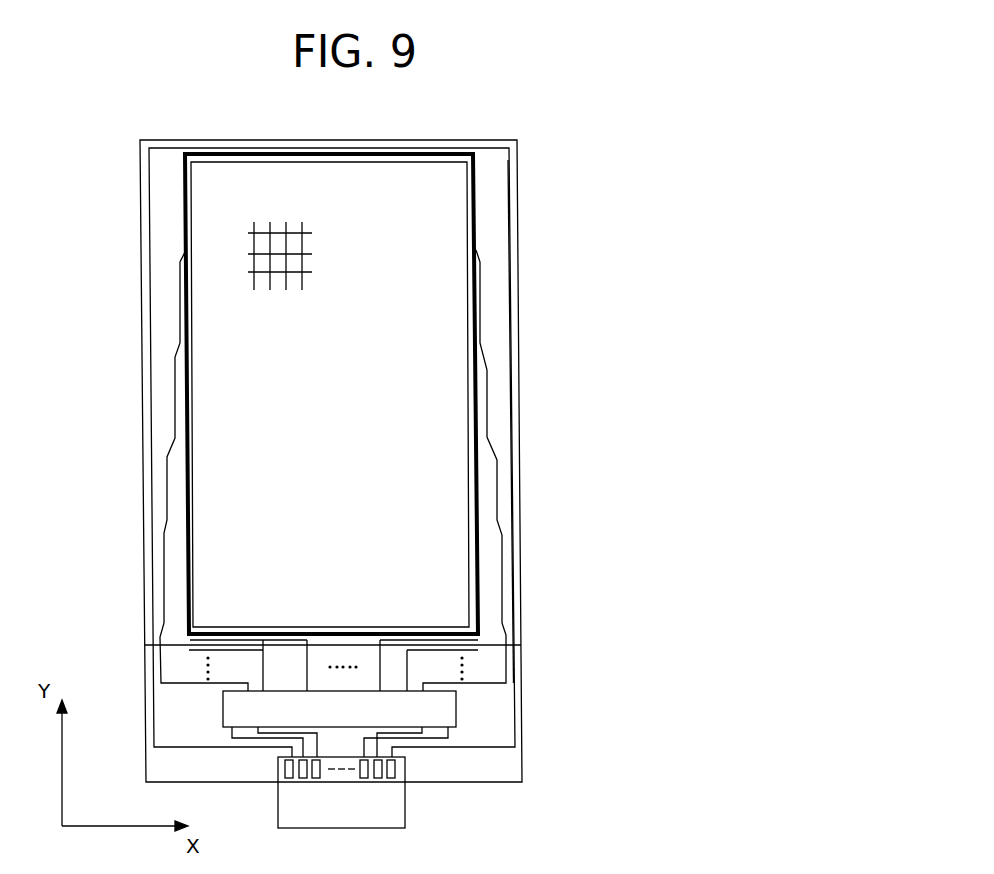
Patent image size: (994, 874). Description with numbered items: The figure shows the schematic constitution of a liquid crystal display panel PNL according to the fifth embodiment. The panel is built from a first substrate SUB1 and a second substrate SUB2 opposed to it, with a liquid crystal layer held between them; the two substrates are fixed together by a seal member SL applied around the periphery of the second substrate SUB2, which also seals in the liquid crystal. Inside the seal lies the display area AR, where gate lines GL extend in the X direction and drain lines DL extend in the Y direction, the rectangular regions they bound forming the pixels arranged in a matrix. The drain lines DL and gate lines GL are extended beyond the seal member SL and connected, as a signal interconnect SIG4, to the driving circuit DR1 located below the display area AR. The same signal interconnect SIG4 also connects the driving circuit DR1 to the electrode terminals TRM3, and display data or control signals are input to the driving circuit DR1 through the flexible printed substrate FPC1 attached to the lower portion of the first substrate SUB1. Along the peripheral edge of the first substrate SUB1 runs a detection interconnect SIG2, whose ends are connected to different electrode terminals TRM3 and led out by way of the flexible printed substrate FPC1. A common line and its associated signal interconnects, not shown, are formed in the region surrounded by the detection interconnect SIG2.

The liquid crystal display panel PNL is at (520, 220).
The first substrate SUB1 is at (545, 762).
The second substrate SUB2 is at (534, 602).
The detection interconnect SIG2 is at (526, 479).
The signal interconnect SIG4 is at (502, 419).
The seal member SL is at (495, 545).
The display area AR is at (494, 363).
The drain line DL is at (316, 216).
The gate line GL is at (316, 284).
The driving circuit DR1 is at (472, 710).
The flexible printed substrate FPC1 is at (418, 813).
The electrode terminal TRM3 is at (415, 780).